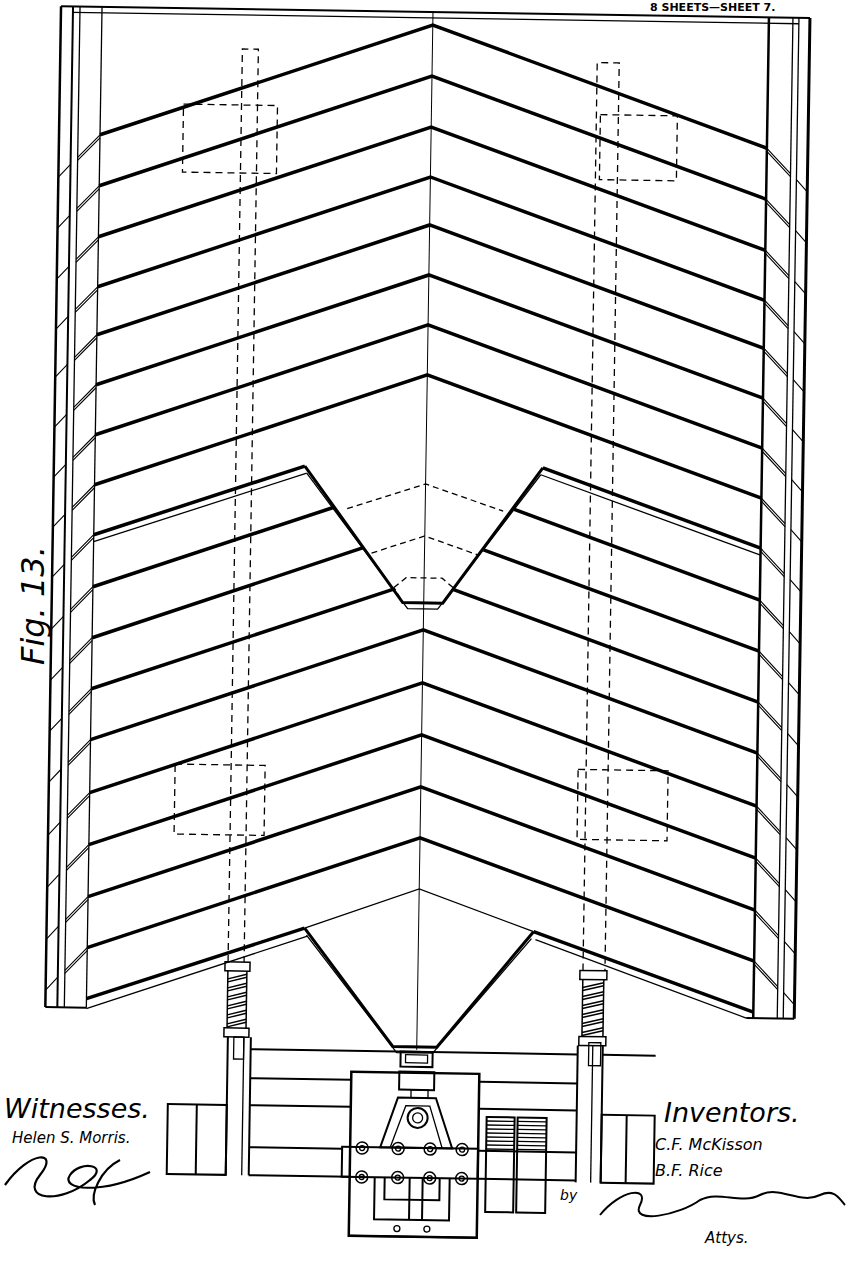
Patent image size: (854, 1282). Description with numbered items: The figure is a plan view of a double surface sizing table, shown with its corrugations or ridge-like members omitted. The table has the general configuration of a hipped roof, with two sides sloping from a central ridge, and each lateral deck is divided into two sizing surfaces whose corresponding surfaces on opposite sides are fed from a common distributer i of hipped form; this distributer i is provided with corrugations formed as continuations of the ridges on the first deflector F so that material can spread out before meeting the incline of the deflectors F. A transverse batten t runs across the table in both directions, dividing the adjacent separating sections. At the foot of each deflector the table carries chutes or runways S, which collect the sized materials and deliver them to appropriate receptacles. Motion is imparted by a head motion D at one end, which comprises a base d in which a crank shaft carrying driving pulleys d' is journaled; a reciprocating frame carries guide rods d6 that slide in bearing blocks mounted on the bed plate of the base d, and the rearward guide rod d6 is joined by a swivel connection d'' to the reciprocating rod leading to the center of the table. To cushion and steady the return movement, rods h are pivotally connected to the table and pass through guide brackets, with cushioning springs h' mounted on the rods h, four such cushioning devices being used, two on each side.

The chutes or runways S is at (61, 258).
The first deflector F is at (427, 519).
The transverse batten t is at (428, 494).
The distributer i is at (419, 759).
The rods h is at (411, 1103).
The cushioning springs h' is at (415, 1004).
The swivel connection d'' is at (387, 1041).
The guide rods d6 is at (417, 1128).
The base d is at (401, 1154).
The head motion D is at (397, 1207).
The driving pulleys d' is at (516, 1178).